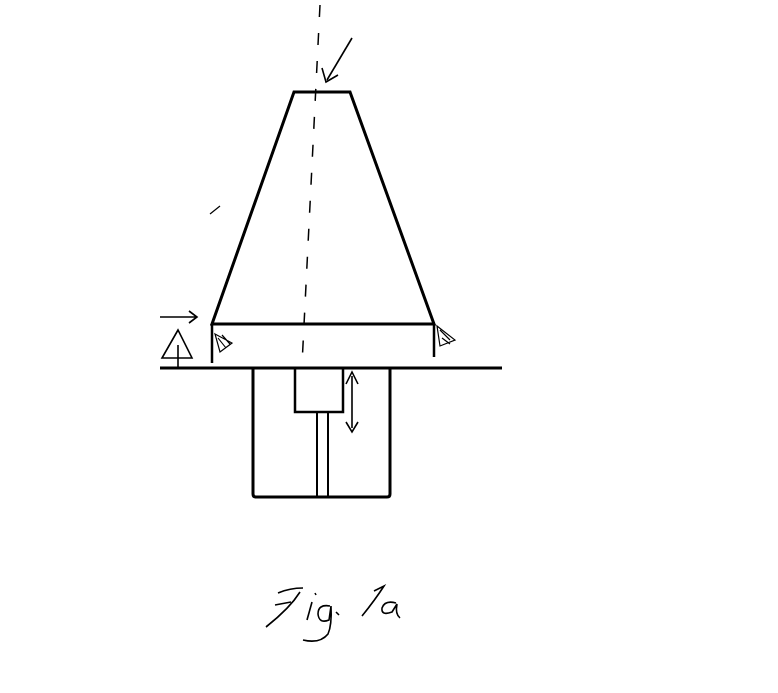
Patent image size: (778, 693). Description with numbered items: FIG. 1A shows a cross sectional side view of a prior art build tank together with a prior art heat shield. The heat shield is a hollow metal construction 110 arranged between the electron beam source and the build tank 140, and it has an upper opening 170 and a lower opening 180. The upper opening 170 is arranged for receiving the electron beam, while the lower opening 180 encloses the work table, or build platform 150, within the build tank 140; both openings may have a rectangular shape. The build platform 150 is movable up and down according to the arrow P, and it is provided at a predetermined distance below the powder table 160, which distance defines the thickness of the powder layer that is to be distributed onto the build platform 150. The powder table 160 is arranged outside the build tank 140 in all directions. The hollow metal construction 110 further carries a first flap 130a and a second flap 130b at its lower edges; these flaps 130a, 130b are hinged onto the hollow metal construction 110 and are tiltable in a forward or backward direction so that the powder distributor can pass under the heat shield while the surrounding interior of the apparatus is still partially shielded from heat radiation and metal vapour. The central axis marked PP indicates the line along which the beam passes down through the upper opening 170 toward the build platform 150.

The hollow metal construction 110 is at (387, 243).
The first flap 130a is at (243, 341).
The second flap 130b is at (440, 333).
The build tank 140 is at (390, 453).
The build platform 150 is at (360, 357).
The powder table 160 is at (473, 368).
The upper opening 170 is at (100, 327).
The lower opening 180 is at (295, 330).
The arrow P is at (361, 402).
The central axis PP is at (317, 52).